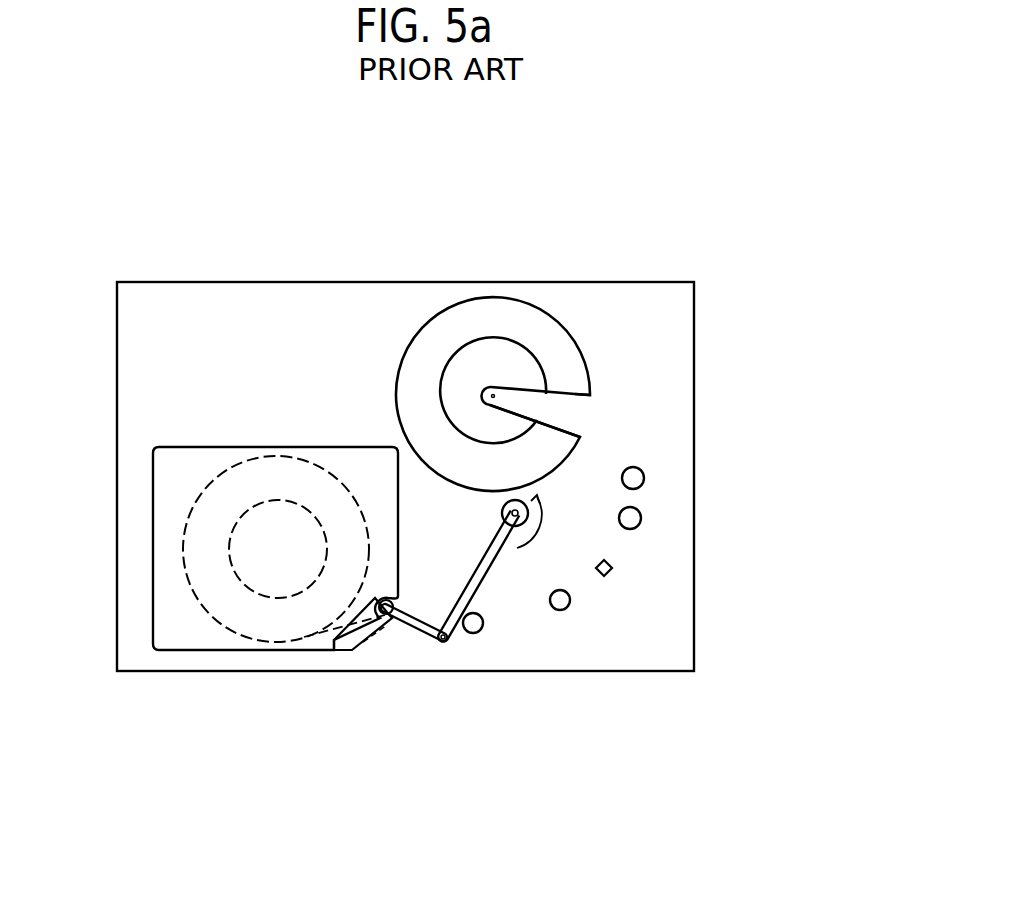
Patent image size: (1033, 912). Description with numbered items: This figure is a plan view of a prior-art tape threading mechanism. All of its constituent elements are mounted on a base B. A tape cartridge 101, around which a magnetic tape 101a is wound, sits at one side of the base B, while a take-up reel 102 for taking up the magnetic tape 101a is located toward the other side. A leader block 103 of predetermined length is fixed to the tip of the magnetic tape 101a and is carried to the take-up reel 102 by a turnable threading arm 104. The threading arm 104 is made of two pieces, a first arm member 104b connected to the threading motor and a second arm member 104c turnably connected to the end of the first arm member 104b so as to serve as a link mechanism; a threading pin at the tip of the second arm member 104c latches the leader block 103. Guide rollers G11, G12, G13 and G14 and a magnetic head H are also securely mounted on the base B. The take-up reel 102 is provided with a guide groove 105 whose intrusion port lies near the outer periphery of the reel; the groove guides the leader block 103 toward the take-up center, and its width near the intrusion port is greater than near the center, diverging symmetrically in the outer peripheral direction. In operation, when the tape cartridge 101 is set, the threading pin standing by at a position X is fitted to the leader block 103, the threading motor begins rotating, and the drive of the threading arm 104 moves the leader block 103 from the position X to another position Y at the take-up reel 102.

The base B is at (165, 282).
The tape cartridge 101 is at (152, 623).
The magnetic tape 101a is at (238, 632).
The take-up reel 102 is at (540, 307).
The leader block 103 is at (356, 645).
The threading arm 104 is at (455, 483).
The first arm member 104b is at (477, 577).
The second arm member 104c is at (436, 642).
The guide groove 105 is at (574, 405).
The guide roller G11 is at (474, 633).
The guide roller G12 is at (562, 610).
The guide roller G13 is at (642, 515).
The guide roller G14 is at (643, 472).
The magnetic head H is at (612, 568).
The position X is at (372, 640).
The position Y is at (493, 386).